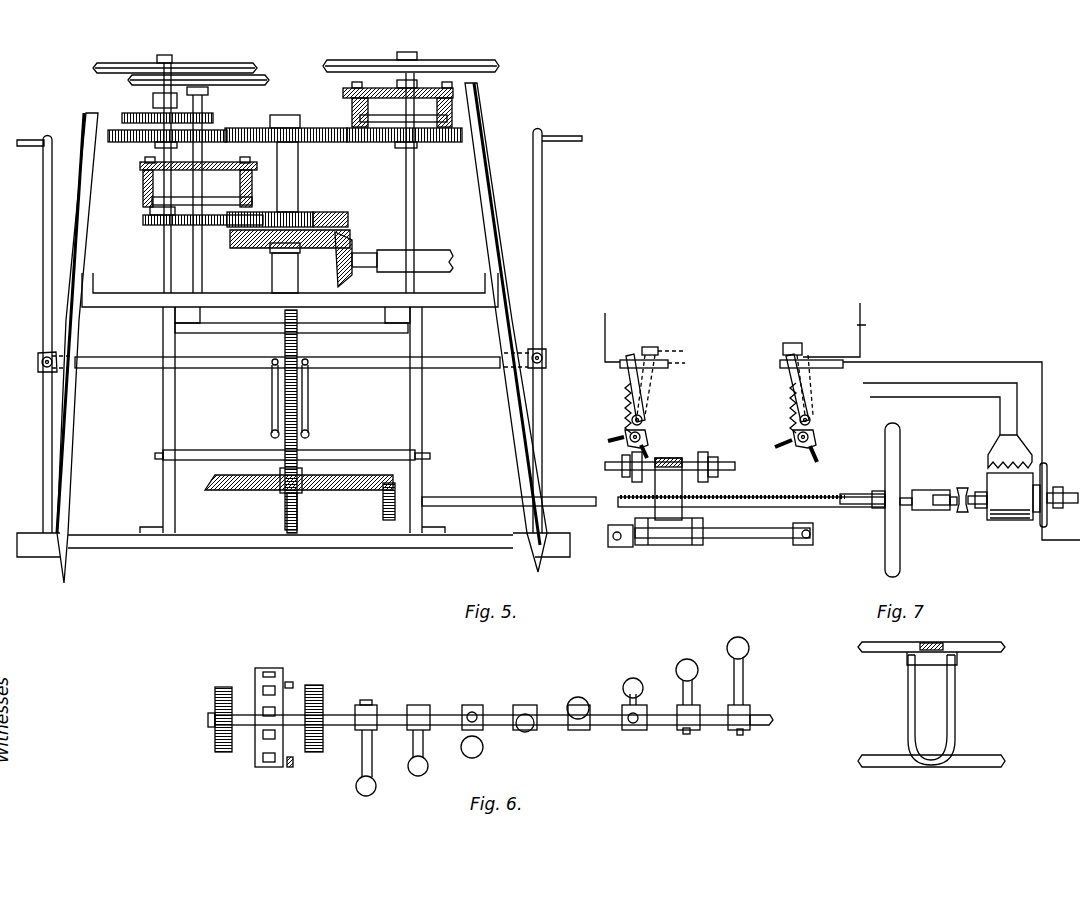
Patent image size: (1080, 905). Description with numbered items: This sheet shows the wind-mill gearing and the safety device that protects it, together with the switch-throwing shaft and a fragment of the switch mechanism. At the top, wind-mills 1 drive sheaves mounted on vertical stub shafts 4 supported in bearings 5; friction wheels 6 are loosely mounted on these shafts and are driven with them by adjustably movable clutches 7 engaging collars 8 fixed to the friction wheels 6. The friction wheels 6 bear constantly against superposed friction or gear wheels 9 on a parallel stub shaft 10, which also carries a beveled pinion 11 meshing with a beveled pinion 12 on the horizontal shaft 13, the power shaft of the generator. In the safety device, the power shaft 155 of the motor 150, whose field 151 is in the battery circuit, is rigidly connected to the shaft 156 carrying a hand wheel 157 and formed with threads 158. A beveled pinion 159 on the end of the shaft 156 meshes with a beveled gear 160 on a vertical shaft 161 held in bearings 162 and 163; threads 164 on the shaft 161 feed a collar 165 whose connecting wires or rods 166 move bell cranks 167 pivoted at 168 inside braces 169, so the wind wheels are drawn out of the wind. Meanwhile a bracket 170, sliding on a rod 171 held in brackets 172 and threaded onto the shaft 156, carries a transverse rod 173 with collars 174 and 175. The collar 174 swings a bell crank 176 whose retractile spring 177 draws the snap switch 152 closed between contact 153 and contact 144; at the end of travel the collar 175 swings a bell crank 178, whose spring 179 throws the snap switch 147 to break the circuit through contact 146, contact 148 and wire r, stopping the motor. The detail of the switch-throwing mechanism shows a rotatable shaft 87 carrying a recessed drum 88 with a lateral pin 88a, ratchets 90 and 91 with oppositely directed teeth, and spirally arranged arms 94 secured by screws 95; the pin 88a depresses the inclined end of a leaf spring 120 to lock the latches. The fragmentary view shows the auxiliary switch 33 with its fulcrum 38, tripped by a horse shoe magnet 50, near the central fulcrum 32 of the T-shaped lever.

In FIG. 5, the wind-mill 1 is at (296, 67).
In FIG. 5, the stub shaft 4 is at (163, 245).
In FIG. 5, the bearing 5 is at (122, 298).
In FIG. 5, the friction wheel 6 is at (125, 142).
In FIG. 5, the clutch 7 is at (143, 168).
In FIG. 5, the collar 8 is at (152, 222).
In FIG. 5, the friction or gear wheel 9 is at (327, 143).
In FIG. 5, the stub shaft 10 is at (298, 187).
In FIG. 5, the beveled pinion 11 is at (317, 240).
In FIG. 5, the beveled pinion 12 is at (352, 245).
In FIG. 5, the shaft 13 is at (438, 257).
In FIG. 5, the contact 144 is at (667, 344).
In FIG. 5, the contact 146 is at (792, 348).
In FIG. 5, the snap switch 147 is at (810, 410).
In FIG. 5, the contact 148 is at (828, 368).
In FIG. 5, the motor 150 is at (1007, 522).
In FIG. 5, the field 151 is at (998, 455).
In FIG. 5, the snap switch 152 is at (641, 405).
In FIG. 5, the contact 153 is at (655, 347).
In FIG. 5, the power shaft 155 is at (1065, 490).
In FIG. 5, the shaft 156 is at (923, 510).
In FIG. 5, the hand wheel 157 is at (890, 547).
In FIG. 5, the threads 158 is at (792, 498).
In FIG. 5, the beveled pinion 159 is at (385, 508).
In FIG. 5, the beveled gear 160 is at (336, 488).
In FIG. 5, the vertical shaft 161 is at (288, 503).
In FIG. 5, the bearing 162 is at (263, 543).
In FIG. 5, the bearing 163 is at (322, 330).
In FIG. 5, the threads 164 is at (297, 408).
In FIG. 5, the collar 165 is at (307, 452).
In FIG. 5, the connecting wire or rod 166 is at (272, 405).
In FIG. 5, the bell crank 167 is at (143, 368).
In FIG. 5, the pivot 168 is at (45, 375).
In FIG. 5, the brace 169 is at (53, 437).
In FIG. 5, the bracket 170 is at (670, 468).
In FIG. 5, the rod 171 is at (725, 540).
In FIG. 5, the bracket 172 is at (622, 547).
In FIG. 5, the transverse rod 173 is at (735, 468).
In FIG. 5, the collar 174 is at (625, 470).
In FIG. 5, the collar 175 is at (708, 462).
In FIG. 5, the bell crank 176 is at (645, 443).
In FIG. 5, the retractile spring 177 is at (628, 418).
In FIG. 5, the bell crank 178 is at (818, 453).
In FIG. 5, the spring 179 is at (792, 412).
In FIG. 5, the wire r is at (925, 357).
In FIG. 6, the shaft 87 is at (340, 715).
In FIG. 6, the drum 88 is at (275, 686).
In FIG. 6, the pin 88a is at (295, 684).
In FIG. 6, the ratchet 90 is at (227, 686).
In FIG. 6, the ratchet 91 is at (323, 690).
In FIG. 6, the arm 94 is at (362, 745).
In FIG. 6, the screw 95 is at (372, 702).
In FIG. 6, the leaf spring 120 is at (289, 770).
In FIG. 7, the fulcrum 32 is at (898, 768).
In FIG. 7, the auxiliary switch 33 is at (935, 643).
In FIG. 7, the fulcrum 38 is at (875, 643).
In FIG. 7, the horse shoe magnet 50 is at (955, 708).